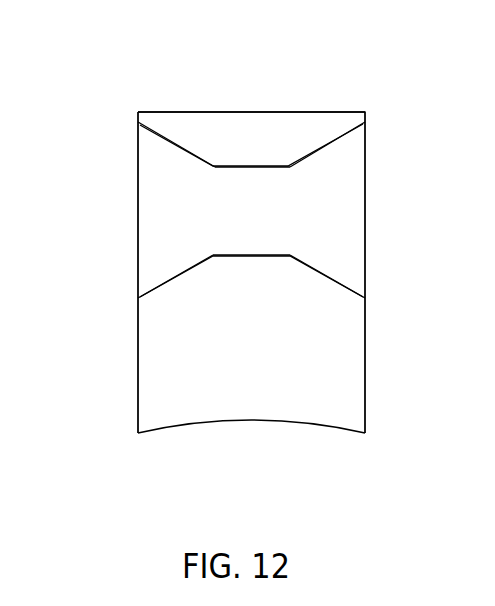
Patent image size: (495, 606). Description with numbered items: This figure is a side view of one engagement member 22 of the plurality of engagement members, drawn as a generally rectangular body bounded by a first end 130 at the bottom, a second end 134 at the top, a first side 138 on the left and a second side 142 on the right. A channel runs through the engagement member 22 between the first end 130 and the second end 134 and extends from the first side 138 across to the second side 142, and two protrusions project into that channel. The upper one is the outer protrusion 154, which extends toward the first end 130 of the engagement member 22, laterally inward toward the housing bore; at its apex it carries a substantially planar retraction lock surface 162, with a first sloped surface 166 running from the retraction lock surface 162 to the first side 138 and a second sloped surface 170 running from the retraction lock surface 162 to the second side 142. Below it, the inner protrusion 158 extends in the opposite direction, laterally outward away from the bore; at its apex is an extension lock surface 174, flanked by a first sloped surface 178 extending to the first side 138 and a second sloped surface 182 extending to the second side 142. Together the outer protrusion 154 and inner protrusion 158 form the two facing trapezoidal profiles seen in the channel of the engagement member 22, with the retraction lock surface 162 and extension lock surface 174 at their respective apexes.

The engagement member 22 is at (400, 72).
The first end 130 is at (250, 422).
The second end 134 is at (243, 112).
The first side 138 is at (138, 380).
The second side 142 is at (366, 322).
The outer protrusion 154 is at (172, 179).
The inner protrusion 158 is at (163, 252).
The retraction lock surface 162 is at (255, 168).
The first sloped surface 166 is at (173, 142).
The second sloped surface 170 is at (325, 147).
The extension lock surface 174 is at (245, 253).
The first sloped surface 178 is at (157, 288).
The second sloped surface 182 is at (330, 278).